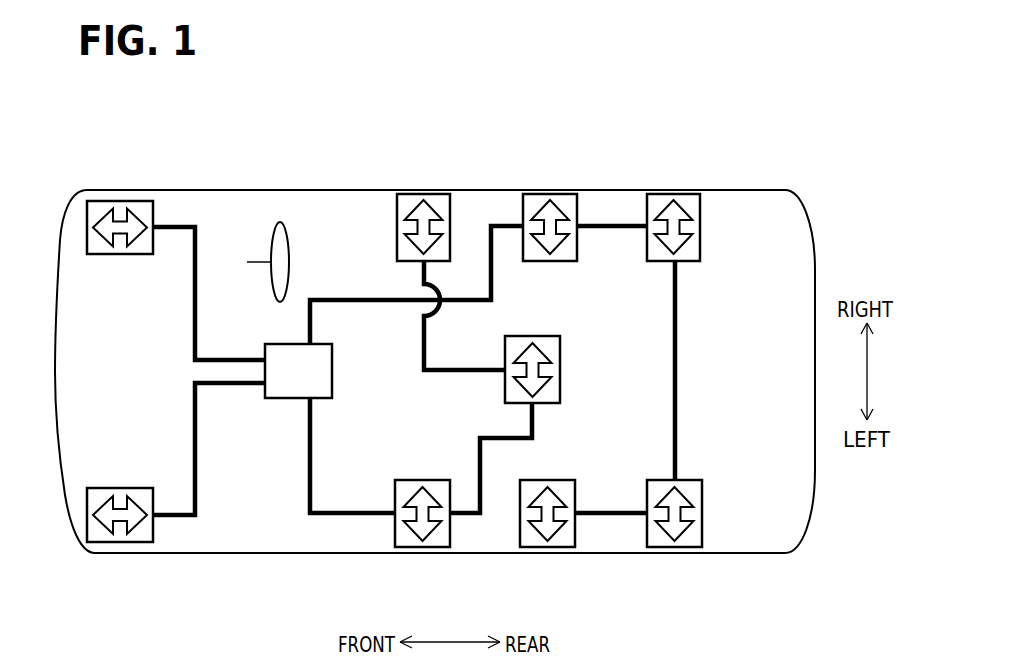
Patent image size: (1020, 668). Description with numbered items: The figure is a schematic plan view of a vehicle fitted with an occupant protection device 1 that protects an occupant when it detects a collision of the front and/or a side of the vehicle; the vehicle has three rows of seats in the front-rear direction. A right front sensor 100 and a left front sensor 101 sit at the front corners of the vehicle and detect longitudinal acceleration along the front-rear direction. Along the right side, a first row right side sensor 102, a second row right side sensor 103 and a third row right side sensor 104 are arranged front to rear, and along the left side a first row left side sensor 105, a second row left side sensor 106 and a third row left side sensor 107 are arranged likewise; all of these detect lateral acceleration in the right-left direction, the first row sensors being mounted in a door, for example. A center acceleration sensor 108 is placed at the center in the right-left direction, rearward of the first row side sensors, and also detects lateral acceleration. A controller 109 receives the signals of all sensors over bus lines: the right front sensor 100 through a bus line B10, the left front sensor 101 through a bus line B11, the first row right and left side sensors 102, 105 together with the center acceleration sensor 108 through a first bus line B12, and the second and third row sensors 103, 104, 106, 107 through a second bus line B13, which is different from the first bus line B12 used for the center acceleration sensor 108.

The occupant protection device 1 is at (448, 103).
The right front sensor 100 is at (103, 201).
The left front sensor 101 is at (103, 542).
The first row right side sensor 102 is at (423, 194).
The second row right side sensor 103 is at (548, 194).
The third row right side sensor 104 is at (672, 194).
The first row left side sensor 105 is at (404, 547).
The second row left side sensor 106 is at (530, 547).
The third row left side sensor 107 is at (657, 547).
The center acceleration sensor 108 is at (560, 368).
The controller 109 is at (333, 368).
The bus line B10 is at (195, 303).
The bus line B11 is at (195, 424).
The first bus line B12 is at (312, 440).
The second bus line B13 is at (344, 298).